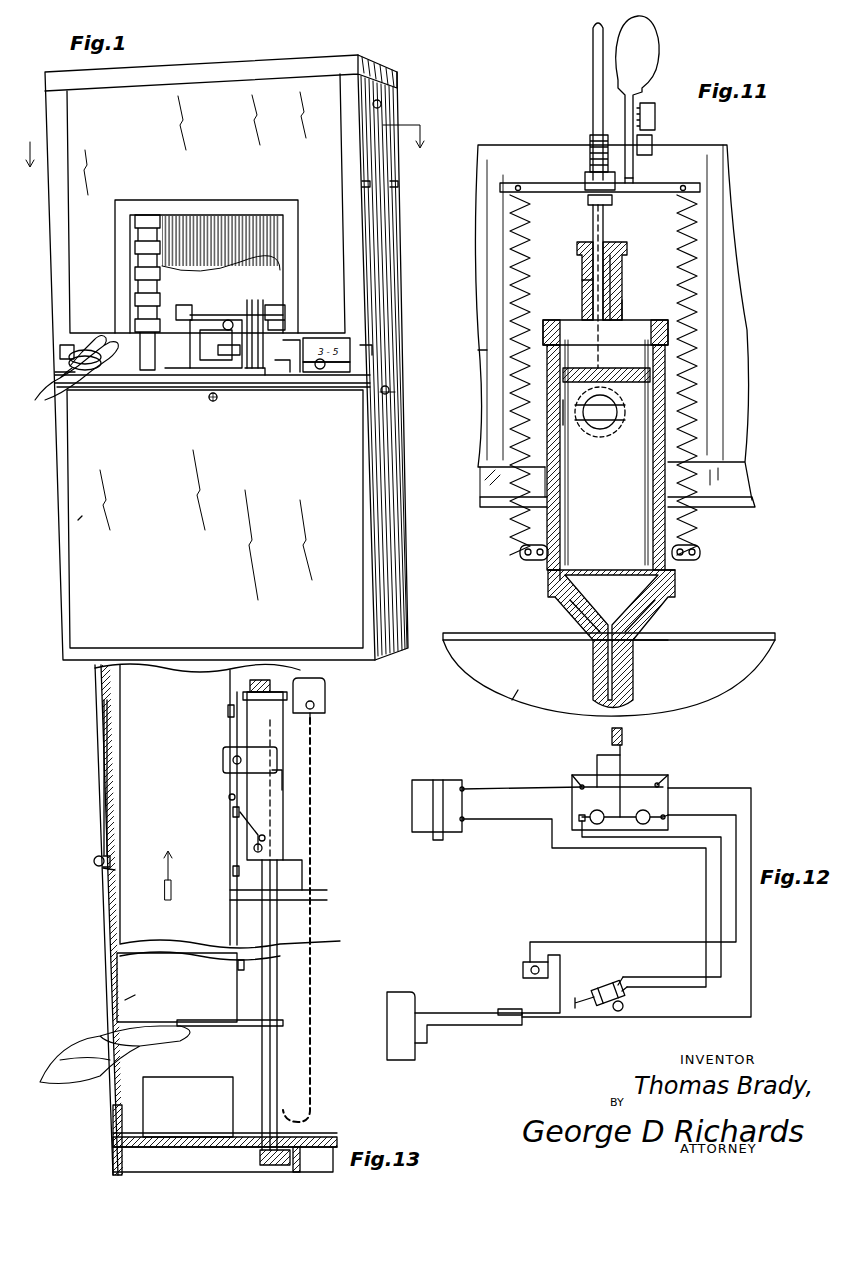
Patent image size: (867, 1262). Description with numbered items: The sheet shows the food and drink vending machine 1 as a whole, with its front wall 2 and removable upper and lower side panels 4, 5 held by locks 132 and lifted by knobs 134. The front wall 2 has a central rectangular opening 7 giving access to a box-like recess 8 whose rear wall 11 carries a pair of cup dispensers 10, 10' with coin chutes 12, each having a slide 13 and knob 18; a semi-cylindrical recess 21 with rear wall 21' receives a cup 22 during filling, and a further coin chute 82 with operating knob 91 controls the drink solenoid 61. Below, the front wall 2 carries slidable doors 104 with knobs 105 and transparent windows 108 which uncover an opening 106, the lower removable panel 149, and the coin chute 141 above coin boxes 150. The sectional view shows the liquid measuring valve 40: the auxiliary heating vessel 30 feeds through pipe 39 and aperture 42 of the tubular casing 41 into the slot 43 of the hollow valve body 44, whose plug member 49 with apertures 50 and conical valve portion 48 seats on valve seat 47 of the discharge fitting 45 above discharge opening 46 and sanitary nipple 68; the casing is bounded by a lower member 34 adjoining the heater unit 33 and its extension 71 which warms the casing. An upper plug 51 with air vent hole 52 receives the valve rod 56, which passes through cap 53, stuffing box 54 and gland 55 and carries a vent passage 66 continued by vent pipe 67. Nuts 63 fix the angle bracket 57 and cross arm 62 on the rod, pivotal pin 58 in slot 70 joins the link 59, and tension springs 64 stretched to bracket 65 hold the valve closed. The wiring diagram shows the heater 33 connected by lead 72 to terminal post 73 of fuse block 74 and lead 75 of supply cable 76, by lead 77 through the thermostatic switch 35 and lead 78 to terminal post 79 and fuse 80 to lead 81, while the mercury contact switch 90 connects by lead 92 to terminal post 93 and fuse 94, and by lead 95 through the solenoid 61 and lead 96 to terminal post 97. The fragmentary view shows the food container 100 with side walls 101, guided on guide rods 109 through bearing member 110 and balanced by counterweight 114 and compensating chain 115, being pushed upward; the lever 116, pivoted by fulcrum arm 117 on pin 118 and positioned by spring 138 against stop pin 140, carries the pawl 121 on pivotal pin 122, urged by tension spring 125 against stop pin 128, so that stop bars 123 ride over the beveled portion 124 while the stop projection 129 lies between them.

In FIG. 1, the food and drink vending machine 1 is at (32, 98).
In FIG. 1, the front wall 2 is at (30, 138).
In FIG. 1, the upper side panel 4 is at (392, 231).
In FIG. 1, the lower side panel 5 is at (392, 483).
In FIG. 1, the central rectangular opening 7 is at (185, 208).
In FIG. 1, the box-like recess 8 is at (150, 279).
In FIG. 1, the cup dispenser 10 is at (168, 391).
In FIG. 1, the cup dispenser 10' is at (285, 386).
In FIG. 1, the rear wall of casing member 11 is at (258, 214).
In FIG. 1, the coin chute 12 is at (272, 305).
In FIG. 1, the slide 13 is at (196, 322).
In FIG. 1, the knob 18 is at (190, 301).
In FIG. 1, the semi-cylindrical recess 21 is at (253, 390).
In FIG. 11, the semi-cylindrical recess 21 is at (609, 661).
In FIG. 11, the rear wall of recess 21' is at (505, 699).
In FIG. 1, the cup 22 is at (243, 370).
In FIG. 11, the auxiliary heating vessel 30 is at (740, 244).
In FIG. 11, the electric heater unit 33 is at (484, 487).
In FIG. 12, the electric heater unit 33 is at (496, 1011).
In FIG. 11, the bottom plate 34 is at (490, 508).
In FIG. 12, the thermostatic switch 35 is at (523, 971).
In FIG. 11, the pipe 39 is at (655, 391).
In FIG. 11, the liquid measuring valve 40 is at (545, 351).
In FIG. 12, the liquid measuring valve 40 is at (387, 1055).
In FIG. 11, the tubular casing 41 is at (665, 426).
In FIG. 11, the aperture 42 is at (660, 409).
In FIG. 11, the slot 43 is at (565, 406).
In FIG. 11, the valve body 44 is at (522, 536).
In FIG. 11, the discharge fitting 45 is at (678, 591).
In FIG. 11, the discharge opening 46 is at (636, 626).
In FIG. 11, the valve seat 47 is at (590, 621).
In FIG. 11, the conical valve portion 48 is at (660, 626).
In FIG. 11, the plug member 49 is at (672, 574).
In FIG. 11, the apertures 50 is at (548, 579).
In FIG. 11, the plug 51 is at (580, 321).
In FIG. 11, the air vent hole 52 is at (633, 326).
In FIG. 11, the cap 53 is at (631, 301).
In FIG. 11, the stuffing box 54 is at (627, 281).
In FIG. 11, the gland 55 is at (580, 250).
In FIG. 11, the valve rod 56 is at (618, 223).
In FIG. 11, the angle bracket 57 is at (637, 176).
In FIG. 11, the pivotal pin 58 is at (656, 118).
In FIG. 11, the link 59 is at (662, 51).
In FIG. 12, the solenoid 61 is at (412, 813).
In FIG. 11, the cross arm 62 is at (553, 177).
In FIG. 11, the nuts 63 is at (590, 152).
In FIG. 11, the tension springs 64 is at (700, 271).
In FIG. 11, the bracket 65 is at (703, 553).
In FIG. 11, the vent passage 66 is at (582, 281).
In FIG. 11, the vent pipe 67 is at (592, 96).
In FIG. 1, the nipple 68 is at (228, 320).
In FIG. 11, the nipple 68 is at (635, 681).
In FIG. 11, the vertical slot 70 is at (655, 146).
In FIG. 12, the extension 71 is at (430, 1036).
In FIG. 12, the lead 72 is at (752, 843).
In FIG. 12, the terminal post 73 is at (670, 784).
In FIG. 12, the fuse block 74 is at (668, 806).
In FIG. 12, the lead 75 is at (597, 758).
In FIG. 12, the current supply cable 76 is at (623, 738).
In FIG. 12, the lead 77 is at (560, 1001).
In FIG. 12, the lead 78 is at (740, 824).
In FIG. 12, the terminal post 79 is at (668, 831).
In FIG. 12, the fuse 80 is at (643, 826).
In FIG. 12, the lead 81 is at (623, 766).
In FIG. 1, the coin chute 82 is at (285, 372).
In FIG. 12, the mercury contact switch 90 is at (600, 985).
In FIG. 1, the operating knob 91 is at (255, 320).
In FIG. 12, the lead 92 is at (640, 985).
In FIG. 12, the terminal post 93 is at (582, 840).
In FIG. 12, the fuse 94 is at (598, 826).
In FIG. 12, the lead 95 is at (498, 826).
In FIG. 12, the lead 96 is at (480, 789).
In FIG. 12, the terminal post 97 is at (580, 786).
In FIG. 13, the food container 100 is at (117, 966).
In FIG. 13, the side walls 101 is at (140, 986).
In FIG. 1, the slidable door 104 is at (326, 372).
In FIG. 13, the slidable door 104 is at (103, 870).
In FIG. 1, the knob 105 is at (320, 369).
In FIG. 13, the knob 105 is at (94, 861).
In FIG. 1, the rectangular opening 106 is at (69, 359).
In FIG. 1, the transparent window 108 is at (352, 341).
In FIG. 13, the transparent window 108 is at (104, 832).
In FIG. 13, the guide rod 109 is at (280, 979).
In FIG. 13, the bearing member 110 is at (245, 1027).
In FIG. 13, the counterweight 114 is at (325, 704).
In FIG. 13, the compensating chain 115 is at (313, 773).
In FIG. 13, the lever 116 is at (290, 716).
In FIG. 13, the fulcrum arm 117 is at (240, 756).
In FIG. 13, the pin 118 is at (232, 764).
In FIG. 13, the pawl 121 is at (285, 859).
In FIG. 13, the pivotal pin 122 is at (258, 846).
In FIG. 13, the stop bars 123 is at (232, 811).
In FIG. 13, the beveled portion 124 is at (252, 836).
In FIG. 13, the tension spring 125 is at (272, 816).
In FIG. 13, the stop pin 128 is at (272, 836).
In FIG. 13, the stop projection 129 is at (230, 701).
In FIG. 1, the lock 132 is at (381, 103).
In FIG. 1, the knob 134 is at (371, 185).
In FIG. 13, the coil tension spring 138 is at (229, 798).
In FIG. 13, the stop pin 140 is at (283, 781).
In FIG. 1, the coin chute 141 is at (58, 376).
In FIG. 1, the lower removable panel 149 is at (78, 521).
In FIG. 13, the coin box 150 is at (210, 1078).